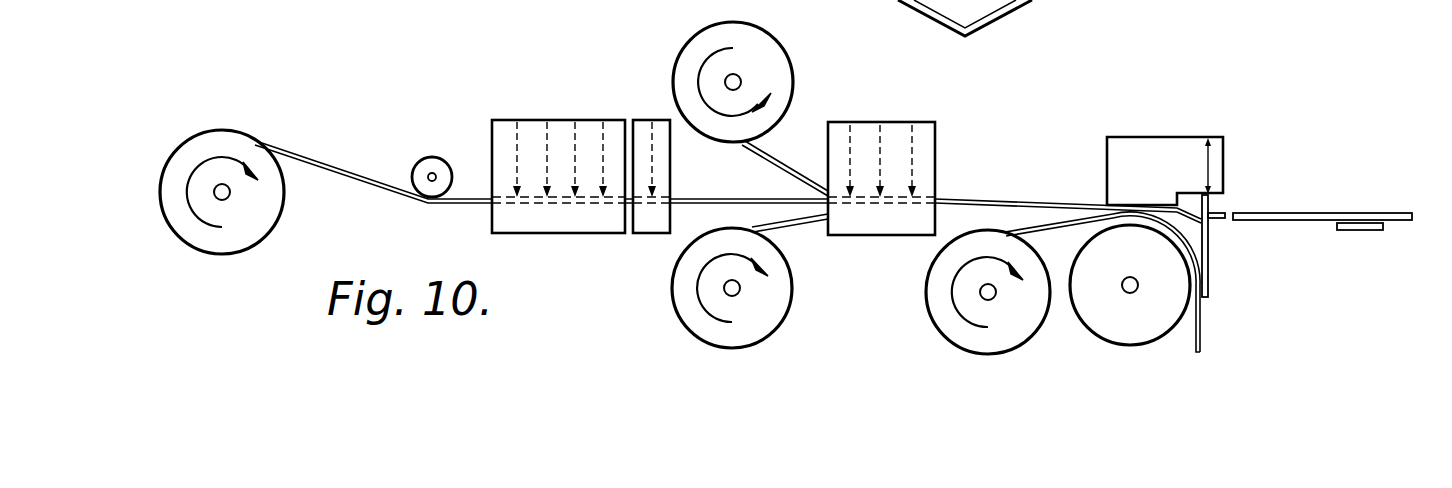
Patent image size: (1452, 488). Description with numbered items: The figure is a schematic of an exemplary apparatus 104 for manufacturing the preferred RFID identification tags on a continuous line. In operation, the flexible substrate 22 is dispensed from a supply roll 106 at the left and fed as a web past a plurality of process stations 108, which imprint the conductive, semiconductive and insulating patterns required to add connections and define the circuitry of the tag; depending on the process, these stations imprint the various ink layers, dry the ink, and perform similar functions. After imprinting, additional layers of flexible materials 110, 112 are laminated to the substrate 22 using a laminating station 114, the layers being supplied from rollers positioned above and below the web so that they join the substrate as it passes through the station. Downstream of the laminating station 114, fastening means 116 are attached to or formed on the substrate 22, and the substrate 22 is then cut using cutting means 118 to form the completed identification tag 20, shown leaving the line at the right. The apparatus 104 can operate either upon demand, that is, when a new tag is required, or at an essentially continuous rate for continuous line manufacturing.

The identification tag 20 is at (1307, 227).
The flexible substrate 22 is at (342, 163).
The apparatus 104 is at (398, 55).
The roll 106 is at (278, 212).
The process stations 108 is at (494, 138).
The flexible material 110 is at (780, 152).
The flexible material 112 is at (790, 230).
The laminating station 114 is at (937, 131).
The fastening means 116 is at (1148, 203).
The cutting means 118 is at (1152, 137).